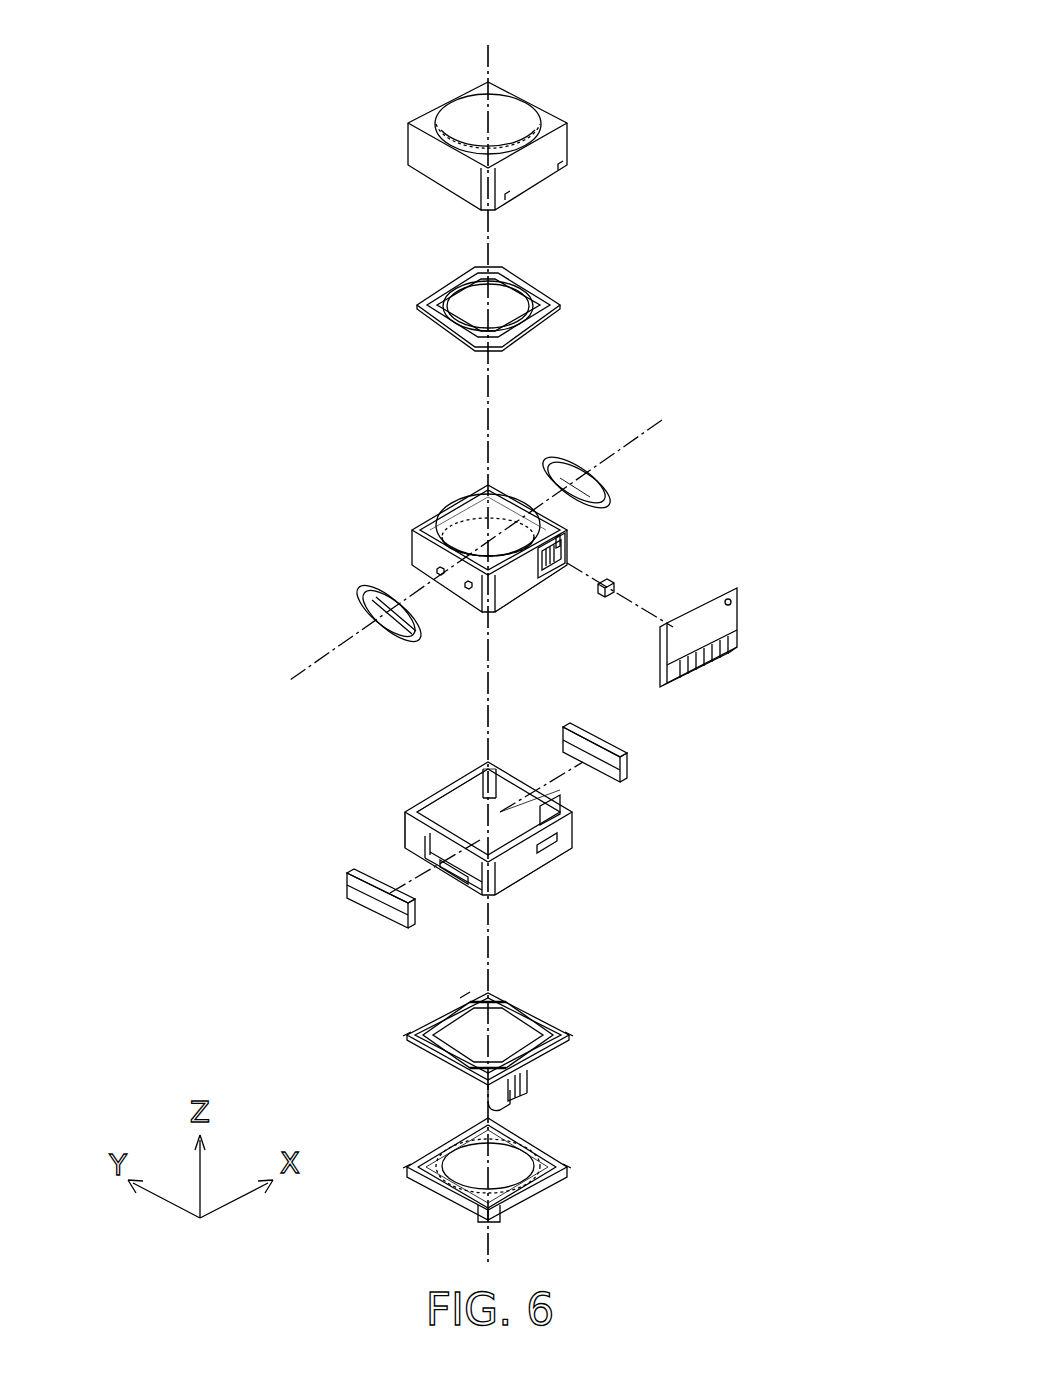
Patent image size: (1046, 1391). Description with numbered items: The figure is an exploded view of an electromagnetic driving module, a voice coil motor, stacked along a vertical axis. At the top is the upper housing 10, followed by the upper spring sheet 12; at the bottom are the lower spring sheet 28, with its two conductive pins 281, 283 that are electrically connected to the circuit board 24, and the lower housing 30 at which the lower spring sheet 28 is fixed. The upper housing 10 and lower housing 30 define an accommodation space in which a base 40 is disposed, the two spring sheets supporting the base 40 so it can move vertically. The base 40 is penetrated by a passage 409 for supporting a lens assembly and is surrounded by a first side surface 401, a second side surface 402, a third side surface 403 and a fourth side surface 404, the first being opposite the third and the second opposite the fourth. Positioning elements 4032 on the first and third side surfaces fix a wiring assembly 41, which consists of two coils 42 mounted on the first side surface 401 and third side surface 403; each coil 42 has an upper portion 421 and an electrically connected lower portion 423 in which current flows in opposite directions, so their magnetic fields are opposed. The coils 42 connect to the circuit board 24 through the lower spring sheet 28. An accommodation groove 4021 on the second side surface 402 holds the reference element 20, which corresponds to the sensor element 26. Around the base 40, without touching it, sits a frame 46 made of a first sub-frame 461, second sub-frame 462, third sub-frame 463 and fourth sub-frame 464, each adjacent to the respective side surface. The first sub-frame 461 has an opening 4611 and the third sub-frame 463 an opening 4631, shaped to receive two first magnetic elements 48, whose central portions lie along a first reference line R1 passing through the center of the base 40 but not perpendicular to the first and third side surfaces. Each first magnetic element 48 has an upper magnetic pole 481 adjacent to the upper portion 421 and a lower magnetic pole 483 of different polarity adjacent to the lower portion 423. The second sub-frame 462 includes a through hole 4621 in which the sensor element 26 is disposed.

The upper housing 10 is at (558, 152).
The upper spring sheet 12 is at (560, 303).
The base 40 is at (507, 537).
The first side surface 401 is at (512, 490).
The second side surface 402 is at (522, 598).
The third side surface 403 is at (468, 590).
The fourth side surface 404 is at (440, 525).
The passage 409 is at (470, 510).
The accommodation groove 4021 is at (570, 557).
The positioning elements 4032 is at (437, 571).
The wiring assembly 41 is at (484, 571).
The coils 42 is at (612, 495).
The upper portion 421 is at (365, 598).
The lower portion 423 is at (372, 615).
The first reference line R1 is at (489, 534).
The reference element 20 is at (555, 580).
The sensor element 26 is at (606, 598).
The circuit board 24 is at (738, 638).
The frame 46 is at (515, 835).
The first sub-frame 461 is at (520, 770).
The second sub-frame 462 is at (520, 885).
The third sub-frame 463 is at (405, 843).
The fourth sub-frame 464 is at (445, 785).
The opening 4611 is at (560, 823).
The through hole 4621 is at (556, 845).
The opening 4631 is at (468, 882).
The first magnetic elements 48 is at (628, 775).
The upper magnetic pole 481 is at (352, 882).
The lower magnetic pole 483 is at (360, 906).
The lower spring sheet 28 is at (444, 1066).
The conductive pin 281 is at (495, 1107).
The conductive pin 283 is at (490, 1087).
The lower housing 30 is at (568, 1168).